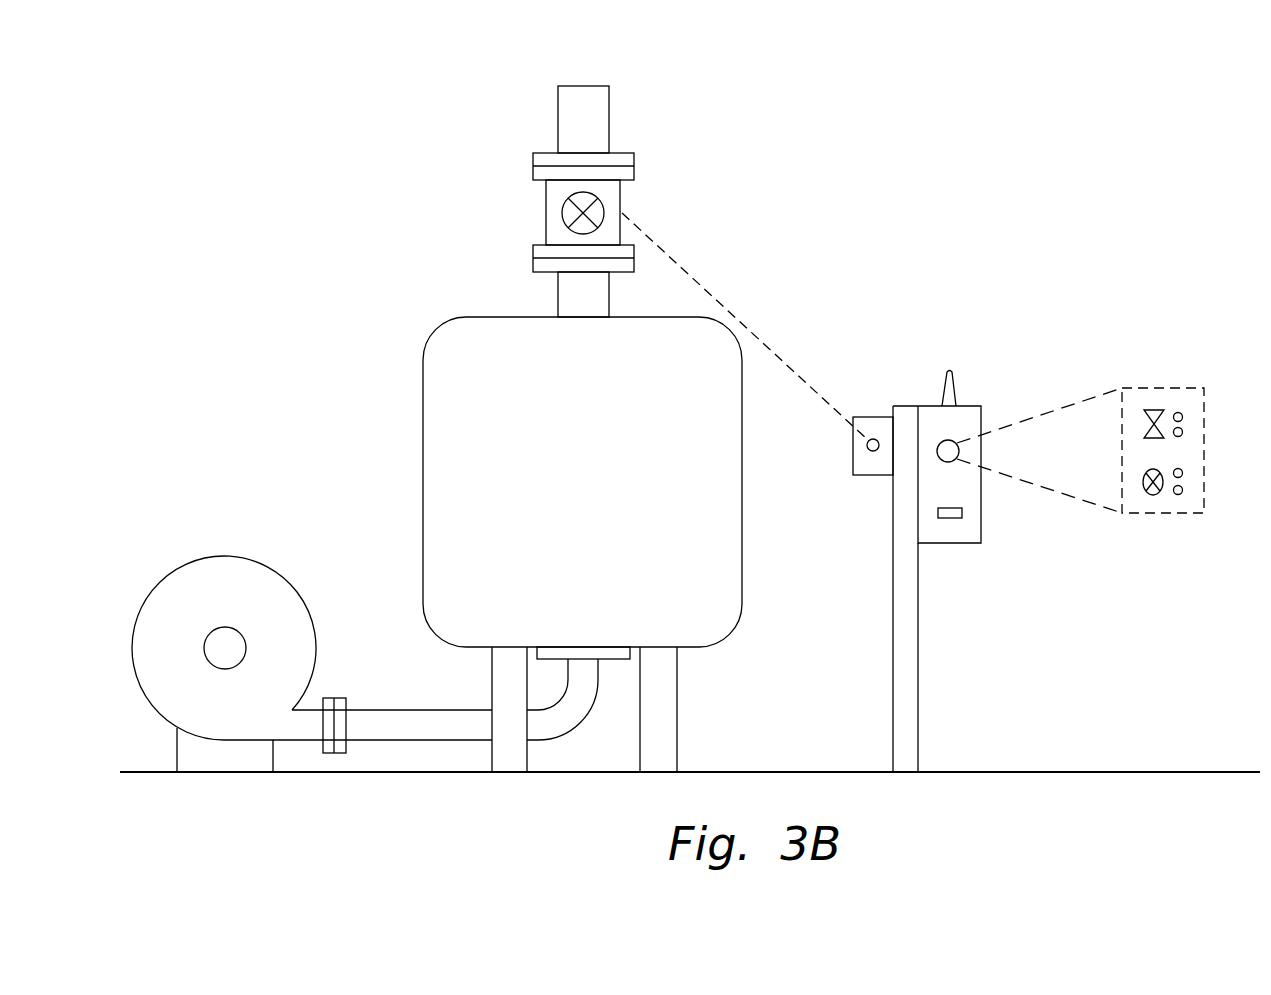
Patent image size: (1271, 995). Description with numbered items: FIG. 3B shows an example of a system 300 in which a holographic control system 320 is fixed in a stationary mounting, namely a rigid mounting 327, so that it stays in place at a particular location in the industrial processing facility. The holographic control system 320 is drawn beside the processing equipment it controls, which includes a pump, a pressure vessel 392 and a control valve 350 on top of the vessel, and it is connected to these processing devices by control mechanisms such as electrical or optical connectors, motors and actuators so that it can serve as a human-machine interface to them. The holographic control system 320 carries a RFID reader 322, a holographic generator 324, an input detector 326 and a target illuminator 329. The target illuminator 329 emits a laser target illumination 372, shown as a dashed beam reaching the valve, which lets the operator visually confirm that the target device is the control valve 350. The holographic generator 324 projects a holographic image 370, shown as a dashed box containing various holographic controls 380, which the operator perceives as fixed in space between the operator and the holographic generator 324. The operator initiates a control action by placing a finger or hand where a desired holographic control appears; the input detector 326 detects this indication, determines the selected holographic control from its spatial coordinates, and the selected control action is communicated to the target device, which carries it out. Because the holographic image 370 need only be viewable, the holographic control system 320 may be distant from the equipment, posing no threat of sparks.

The system 300 is at (226, 557).
The tank 392 is at (423, 403).
The control valve 350 is at (546, 213).
The laser target illumination 372 is at (678, 263).
The target illuminator 329 is at (868, 475).
The rigid mounting 327 is at (918, 697).
The holographic control system 320 is at (981, 523).
The RFID reader 322 is at (948, 370).
The holographic generator 324 is at (960, 451).
The input detector 326 is at (948, 520).
The holographic image 370 is at (1167, 388).
The holographic controls 380 is at (1183, 425).